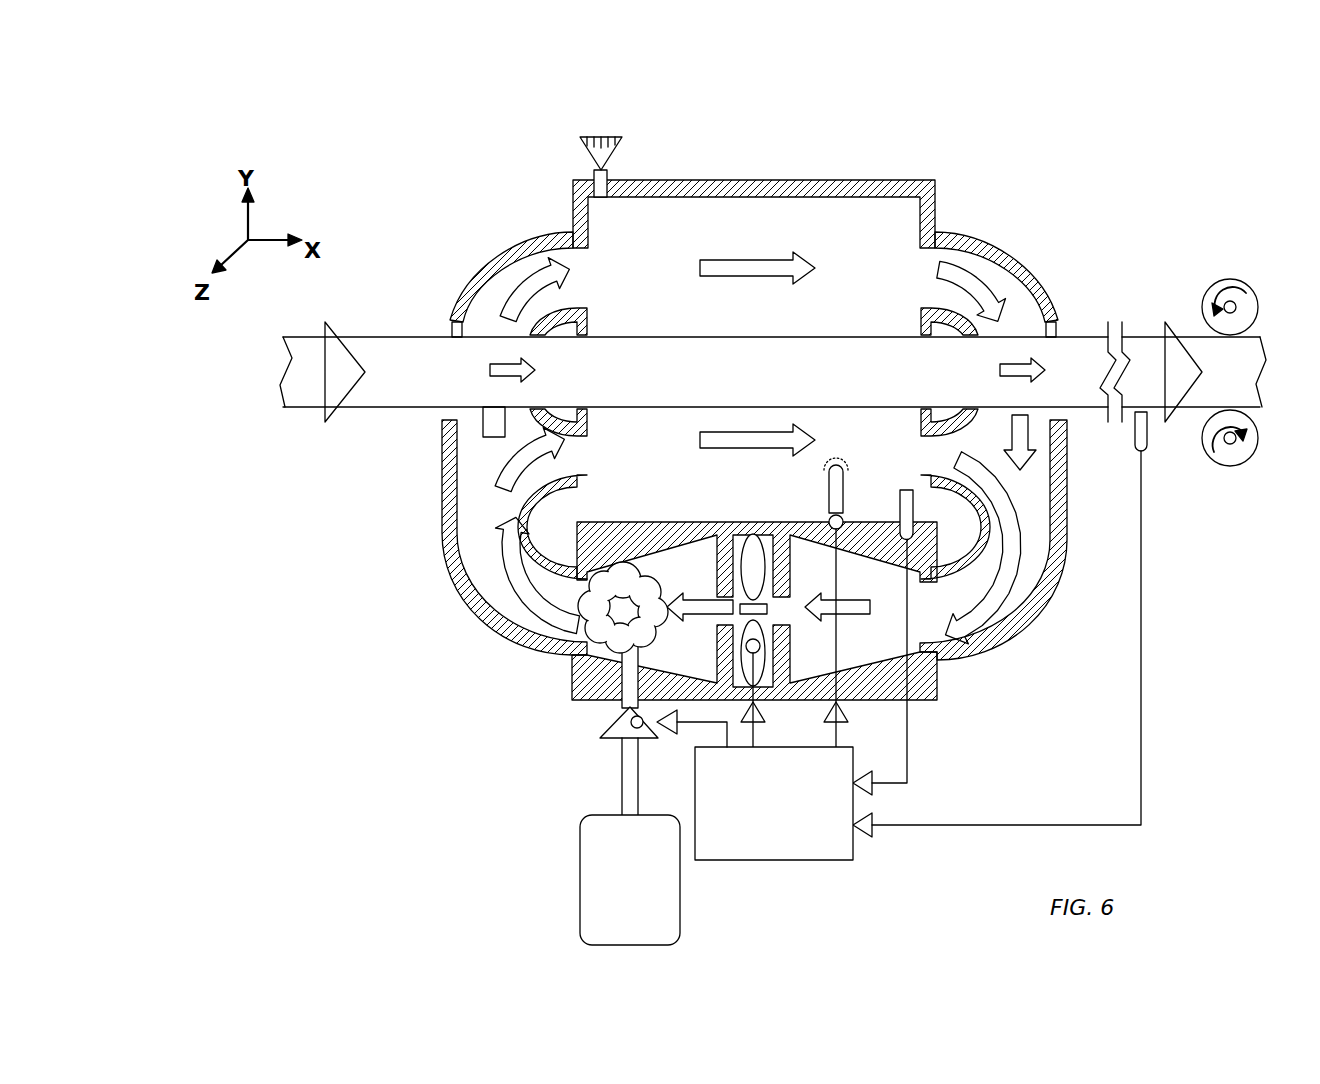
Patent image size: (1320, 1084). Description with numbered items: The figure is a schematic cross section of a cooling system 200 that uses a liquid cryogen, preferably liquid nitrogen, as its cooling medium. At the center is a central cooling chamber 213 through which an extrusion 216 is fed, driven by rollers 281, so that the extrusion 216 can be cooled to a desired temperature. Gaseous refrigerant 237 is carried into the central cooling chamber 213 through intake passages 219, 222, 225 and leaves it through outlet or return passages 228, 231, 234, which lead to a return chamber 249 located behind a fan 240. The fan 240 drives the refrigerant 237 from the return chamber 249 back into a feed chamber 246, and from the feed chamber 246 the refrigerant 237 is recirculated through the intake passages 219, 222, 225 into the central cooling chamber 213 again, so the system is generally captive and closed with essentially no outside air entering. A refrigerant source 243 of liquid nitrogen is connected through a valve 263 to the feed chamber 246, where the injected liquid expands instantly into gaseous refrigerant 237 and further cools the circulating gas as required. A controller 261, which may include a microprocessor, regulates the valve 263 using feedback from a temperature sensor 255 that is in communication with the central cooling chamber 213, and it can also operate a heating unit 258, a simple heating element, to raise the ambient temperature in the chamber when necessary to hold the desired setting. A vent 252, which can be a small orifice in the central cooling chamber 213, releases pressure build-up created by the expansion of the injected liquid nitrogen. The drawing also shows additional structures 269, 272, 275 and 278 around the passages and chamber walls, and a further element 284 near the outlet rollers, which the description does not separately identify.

The cooling system 200 is at (1047, 218).
The central cooling chamber 213 is at (762, 220).
The extrusion 216 is at (382, 345).
The intake passage 219 is at (495, 588).
The inlet passage 222 is at (580, 428).
The inlet passage 225 is at (575, 250).
The outlet passage 228 is at (1030, 490).
The outlet passage 231 is at (928, 428).
The outlet passage 234 is at (937, 247).
The refrigerant 237 is at (650, 590).
The fan 240 is at (752, 565).
The refrigerant source 243 is at (580, 903).
The feed chamber 246 is at (677, 648).
The return chamber 249 is at (863, 642).
The vent 252 is at (620, 156).
The temperature sensor 255 is at (898, 505).
The heating unit 258 is at (828, 492).
The controller 261 is at (812, 862).
The valve 263 is at (598, 724).
The left inlet seal 269 is at (455, 330).
The right outer wall 272 is at (1066, 428).
The left outer wall 275 is at (447, 422).
The right outlet seal 278 is at (1058, 330).
The rollers 281 is at (1147, 442).
The nip rollers 284 is at (1230, 279).